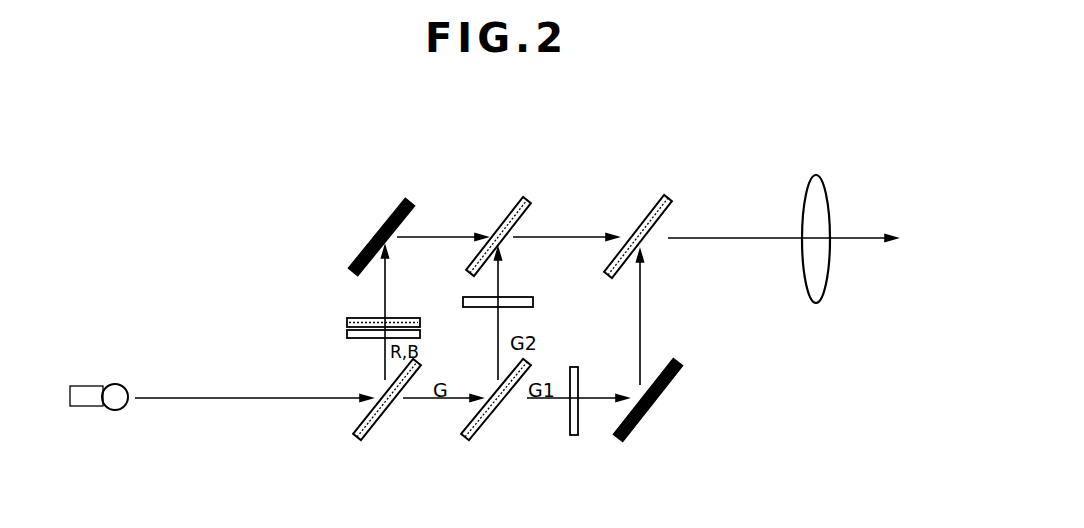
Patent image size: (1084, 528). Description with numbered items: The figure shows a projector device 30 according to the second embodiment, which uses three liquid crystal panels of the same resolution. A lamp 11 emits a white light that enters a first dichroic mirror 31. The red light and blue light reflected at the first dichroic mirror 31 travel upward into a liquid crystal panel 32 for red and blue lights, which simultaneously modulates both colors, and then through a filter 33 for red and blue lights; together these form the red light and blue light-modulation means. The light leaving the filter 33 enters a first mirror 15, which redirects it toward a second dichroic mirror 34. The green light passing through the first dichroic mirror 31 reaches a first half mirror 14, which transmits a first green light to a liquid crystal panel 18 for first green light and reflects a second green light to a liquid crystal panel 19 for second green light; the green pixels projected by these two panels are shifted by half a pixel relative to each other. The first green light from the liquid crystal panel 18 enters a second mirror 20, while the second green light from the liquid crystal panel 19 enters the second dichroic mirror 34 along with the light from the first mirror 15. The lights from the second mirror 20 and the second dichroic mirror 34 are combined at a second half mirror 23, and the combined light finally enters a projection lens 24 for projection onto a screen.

The lamp 11 is at (122, 384).
The first dichroic mirror 31 is at (380, 418).
The first half mirror 14 is at (490, 420).
The first mirror 15 is at (411, 196).
The second dichroic mirror 34 is at (526, 196).
The second half mirror 23 is at (666, 196).
The second mirror 20 is at (650, 412).
The projection lens 24 is at (818, 174).
The filter for red and blue lights 33 is at (346, 322).
The liquid crystal panel for red and blue lights 32 is at (346, 335).
The liquid crystal panel for second green light 19 is at (535, 302).
The liquid crystal panel for first green light 18 is at (575, 437).
The projector device 30 is at (791, 331).